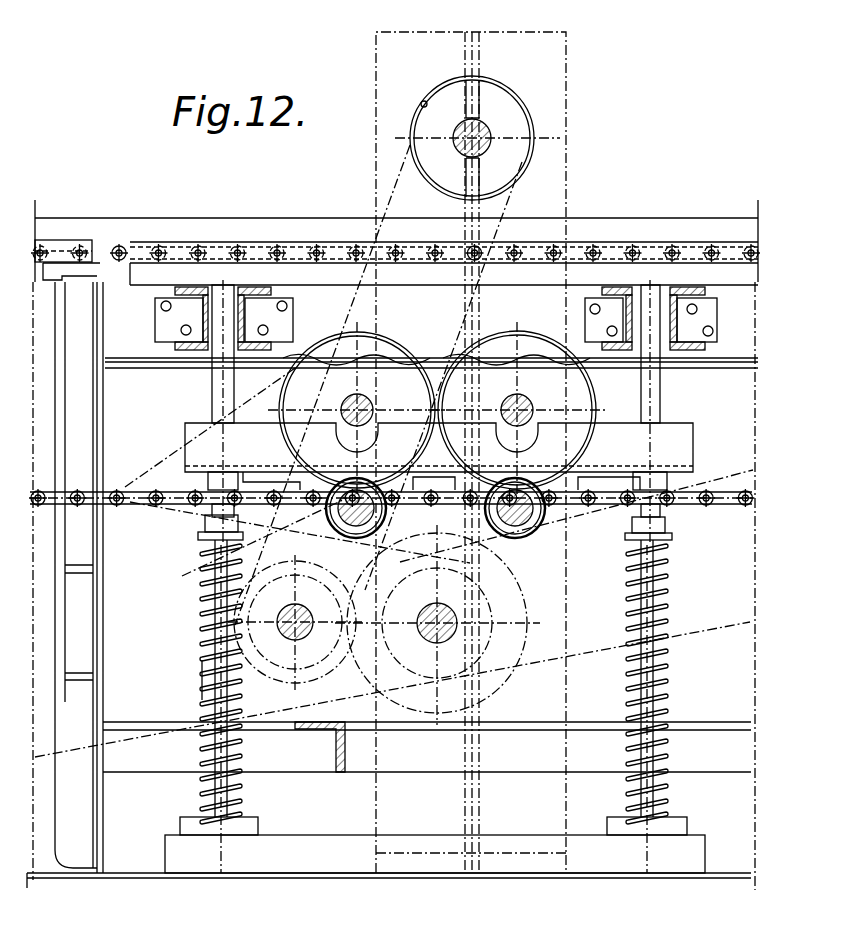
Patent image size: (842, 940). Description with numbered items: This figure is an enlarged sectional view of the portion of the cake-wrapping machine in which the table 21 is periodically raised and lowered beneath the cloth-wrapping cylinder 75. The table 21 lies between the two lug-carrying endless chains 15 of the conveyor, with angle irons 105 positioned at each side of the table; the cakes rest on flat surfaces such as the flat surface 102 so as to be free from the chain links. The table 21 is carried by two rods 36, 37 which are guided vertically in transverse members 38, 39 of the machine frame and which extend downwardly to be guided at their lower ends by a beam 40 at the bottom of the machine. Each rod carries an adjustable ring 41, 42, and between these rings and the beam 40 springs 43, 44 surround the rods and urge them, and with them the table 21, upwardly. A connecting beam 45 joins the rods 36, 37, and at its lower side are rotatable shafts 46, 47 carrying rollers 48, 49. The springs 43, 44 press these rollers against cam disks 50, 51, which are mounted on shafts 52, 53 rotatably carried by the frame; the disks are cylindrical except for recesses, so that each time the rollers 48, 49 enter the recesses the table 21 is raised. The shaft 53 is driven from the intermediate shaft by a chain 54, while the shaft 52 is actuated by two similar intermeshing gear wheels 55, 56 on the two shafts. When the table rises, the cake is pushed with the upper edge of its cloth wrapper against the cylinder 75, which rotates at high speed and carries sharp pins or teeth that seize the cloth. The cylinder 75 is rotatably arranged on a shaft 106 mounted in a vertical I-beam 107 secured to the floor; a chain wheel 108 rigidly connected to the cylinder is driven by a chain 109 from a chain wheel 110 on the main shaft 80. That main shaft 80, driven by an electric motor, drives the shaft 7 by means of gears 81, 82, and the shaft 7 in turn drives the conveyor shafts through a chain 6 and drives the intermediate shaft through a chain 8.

The chain 6 is at (583, 658).
The shaft 7 is at (425, 630).
The chain 8 is at (348, 697).
The endless chains 15 is at (103, 245).
The table 21 is at (503, 243).
The rod 36 is at (660, 400).
The rod 37 is at (215, 390).
The transverse member 38 is at (670, 322).
The transverse member 39 is at (205, 305).
The beam 40 is at (493, 867).
The adjustable ring 41 is at (650, 525).
The adjustable ring 42 is at (207, 520).
The spring 43 is at (660, 775).
The spring 44 is at (215, 745).
The connecting beam 45 is at (685, 445).
The rotatable shaft 46 is at (522, 530).
The rotatable shaft 47 is at (340, 528).
The roller 48 is at (495, 508).
The roller 49 is at (380, 515).
The cam disk 50 is at (457, 353).
The cam disk 51 is at (400, 368).
The shaft 52 is at (528, 405).
The shaft 53 is at (372, 406).
The chain 54 is at (182, 576).
The gear wheel 55 is at (596, 403).
The gear wheel 56 is at (330, 337).
The cylinder 75 is at (534, 152).
The main shaft 80 is at (300, 637).
The gear 81 is at (247, 666).
The gear 82 is at (490, 700).
The flat surface 102 is at (62, 240).
The angle irons 105 is at (620, 228).
The shaft 106 is at (486, 130).
The vertical I-beam 107 is at (568, 62).
The chain wheel 108 is at (420, 101).
The chain 109 is at (393, 175).
The chain wheel 110 is at (200, 673).